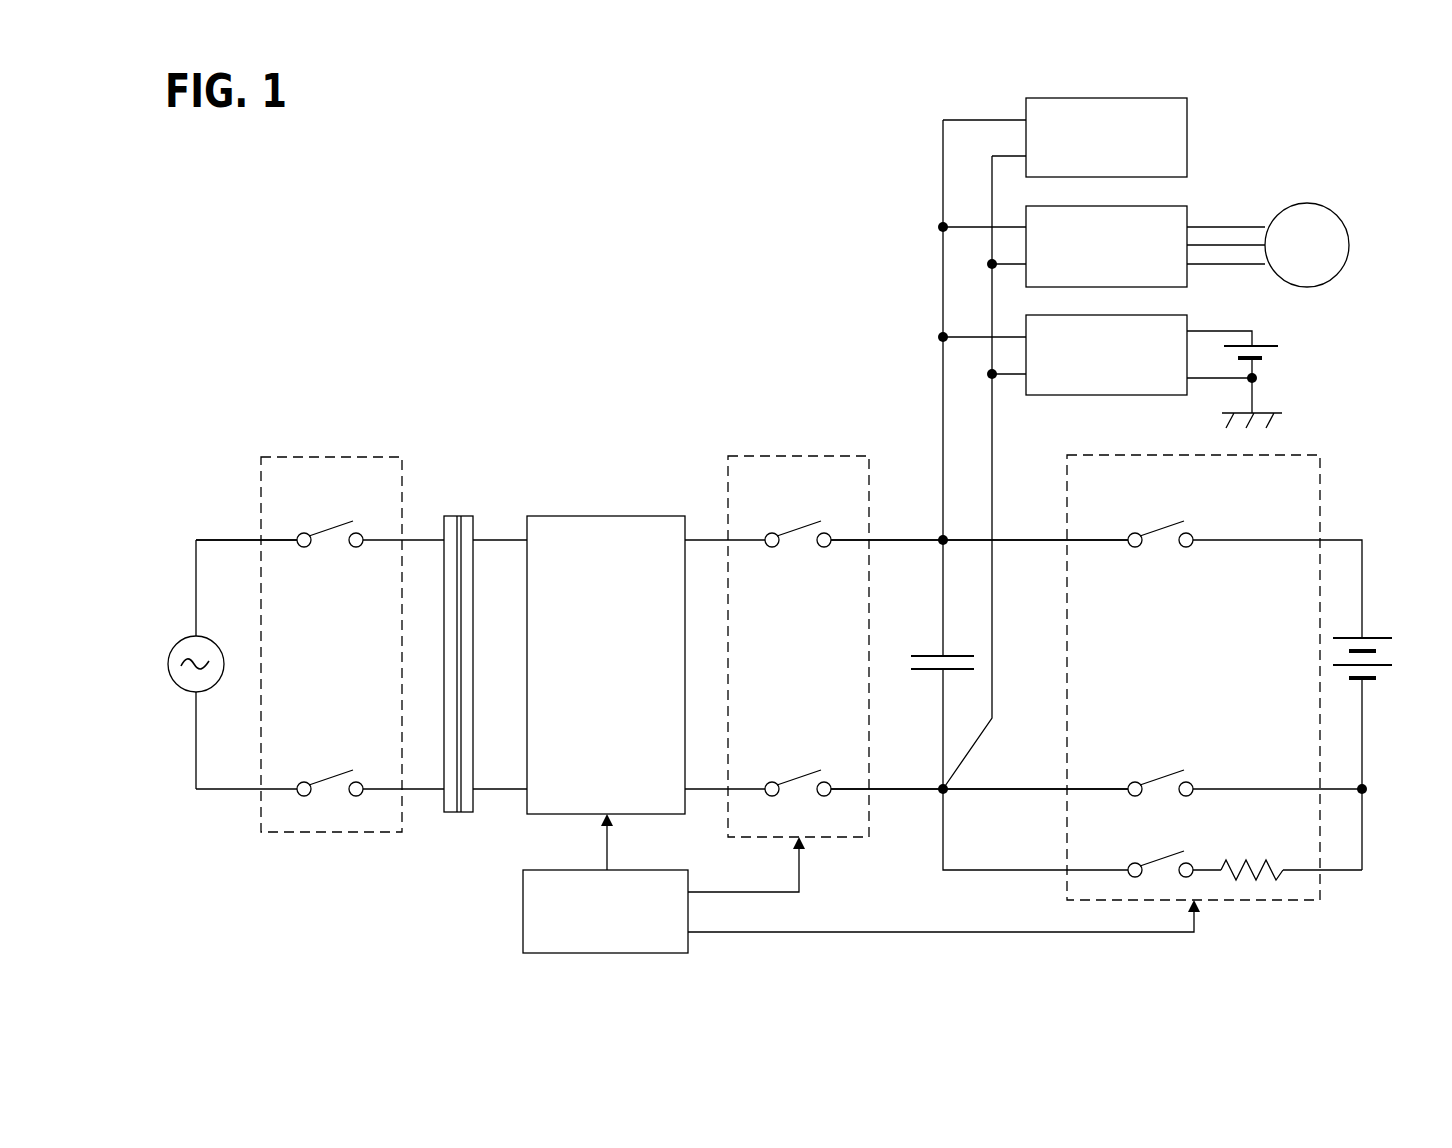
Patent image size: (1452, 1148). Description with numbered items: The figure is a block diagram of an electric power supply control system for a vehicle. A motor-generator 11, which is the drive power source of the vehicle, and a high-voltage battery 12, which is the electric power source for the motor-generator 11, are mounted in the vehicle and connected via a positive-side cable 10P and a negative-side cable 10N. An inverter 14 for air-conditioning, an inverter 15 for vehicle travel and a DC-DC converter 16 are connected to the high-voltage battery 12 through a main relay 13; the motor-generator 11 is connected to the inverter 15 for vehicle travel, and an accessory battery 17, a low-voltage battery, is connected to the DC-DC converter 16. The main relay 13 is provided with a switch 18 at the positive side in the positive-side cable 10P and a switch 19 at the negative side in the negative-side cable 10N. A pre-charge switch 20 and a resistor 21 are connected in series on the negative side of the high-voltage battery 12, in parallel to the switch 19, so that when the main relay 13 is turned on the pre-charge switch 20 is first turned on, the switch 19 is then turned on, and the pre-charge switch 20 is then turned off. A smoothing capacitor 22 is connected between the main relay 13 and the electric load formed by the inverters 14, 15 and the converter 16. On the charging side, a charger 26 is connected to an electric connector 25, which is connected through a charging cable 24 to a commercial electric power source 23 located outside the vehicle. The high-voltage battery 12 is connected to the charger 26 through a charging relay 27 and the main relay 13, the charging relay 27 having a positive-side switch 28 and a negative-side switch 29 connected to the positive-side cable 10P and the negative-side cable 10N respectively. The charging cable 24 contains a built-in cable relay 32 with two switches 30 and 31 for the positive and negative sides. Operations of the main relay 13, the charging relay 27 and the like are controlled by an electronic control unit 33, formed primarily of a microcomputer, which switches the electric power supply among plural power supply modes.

The positive-side cable 10P is at (1044, 542).
The negative-side cable 10N is at (1000, 789).
The motor-generator 11 is at (1338, 208).
The high-voltage battery 12 is at (1380, 638).
The main relay 13 is at (1282, 456).
The inverter for air-conditioning 14 is at (1152, 98).
The inverter for vehicle travel 15 is at (1152, 206).
The DC-DC converter 16 is at (1152, 315).
The accessory battery 17 is at (1264, 345).
The positive-side switch 18 is at (1159, 526).
The negative-side switch 19 is at (1158, 778).
The pre-charge switch 20 is at (1149, 865).
The resistor 21 is at (1265, 867).
The smoothing capacitor 22 is at (929, 654).
The commercial electric power source 23 is at (177, 642).
The charging cable 24 is at (221, 540).
The electric connector 25 is at (459, 516).
The charger 26 is at (600, 516).
The charging relay 27 is at (794, 456).
The positive-side switch of charging relay 28 is at (798, 528).
The negative-side switch of charging relay 29 is at (798, 779).
The cable relay switch 30 is at (329, 528).
The cable relay switch 31 is at (329, 779).
The cable relay 32 is at (326, 457).
The electronic control unit 33 is at (523, 912).